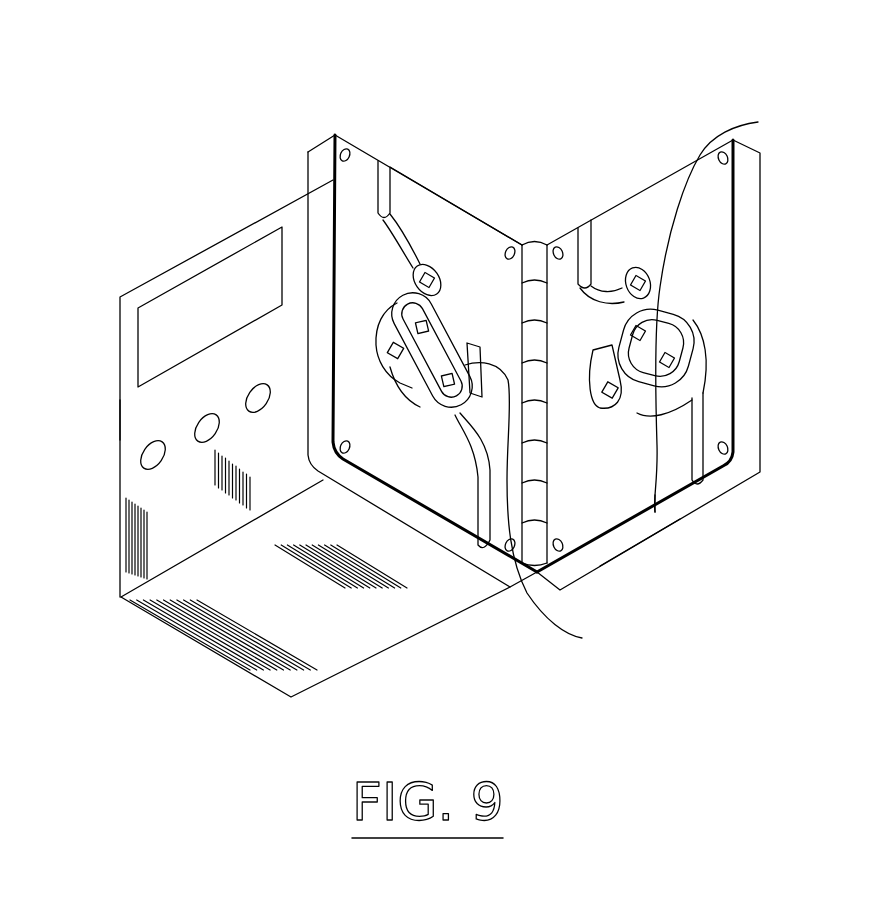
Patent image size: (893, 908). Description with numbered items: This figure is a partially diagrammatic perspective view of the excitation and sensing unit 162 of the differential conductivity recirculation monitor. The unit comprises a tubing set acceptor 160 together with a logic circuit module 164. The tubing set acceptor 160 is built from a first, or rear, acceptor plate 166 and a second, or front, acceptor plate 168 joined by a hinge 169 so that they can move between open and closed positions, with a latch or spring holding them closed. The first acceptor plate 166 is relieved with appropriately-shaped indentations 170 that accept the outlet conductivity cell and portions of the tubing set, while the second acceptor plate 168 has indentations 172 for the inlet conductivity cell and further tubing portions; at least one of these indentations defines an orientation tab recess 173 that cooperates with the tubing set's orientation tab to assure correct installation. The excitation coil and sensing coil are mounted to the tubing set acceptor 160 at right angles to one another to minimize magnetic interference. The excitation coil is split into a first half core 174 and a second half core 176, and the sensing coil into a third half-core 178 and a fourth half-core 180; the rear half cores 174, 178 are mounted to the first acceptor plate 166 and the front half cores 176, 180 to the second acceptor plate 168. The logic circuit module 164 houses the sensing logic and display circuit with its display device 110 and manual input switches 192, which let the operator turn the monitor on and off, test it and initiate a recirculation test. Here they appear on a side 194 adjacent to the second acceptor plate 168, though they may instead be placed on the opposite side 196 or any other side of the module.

The display device 110 is at (192, 262).
The tubing set acceptor 160 is at (663, 170).
The excitation and sensing unit 162 is at (323, 93).
The logic circuit module 164 is at (342, 672).
The first acceptor plate 166 is at (641, 548).
The second acceptor plate 168 is at (468, 208).
The hinge 169 is at (535, 244).
The indentations 170 is at (647, 320).
The indentations 172 is at (448, 324).
The orientation tab recess 173 is at (546, 508).
The first half core 174 is at (731, 311).
The second half core 176 is at (403, 307).
The third half-core 178 is at (657, 512).
The fourth half-core 180 is at (447, 405).
The manual input switches 192 is at (252, 415).
The side 194 is at (199, 519).
The side 196 is at (120, 420).